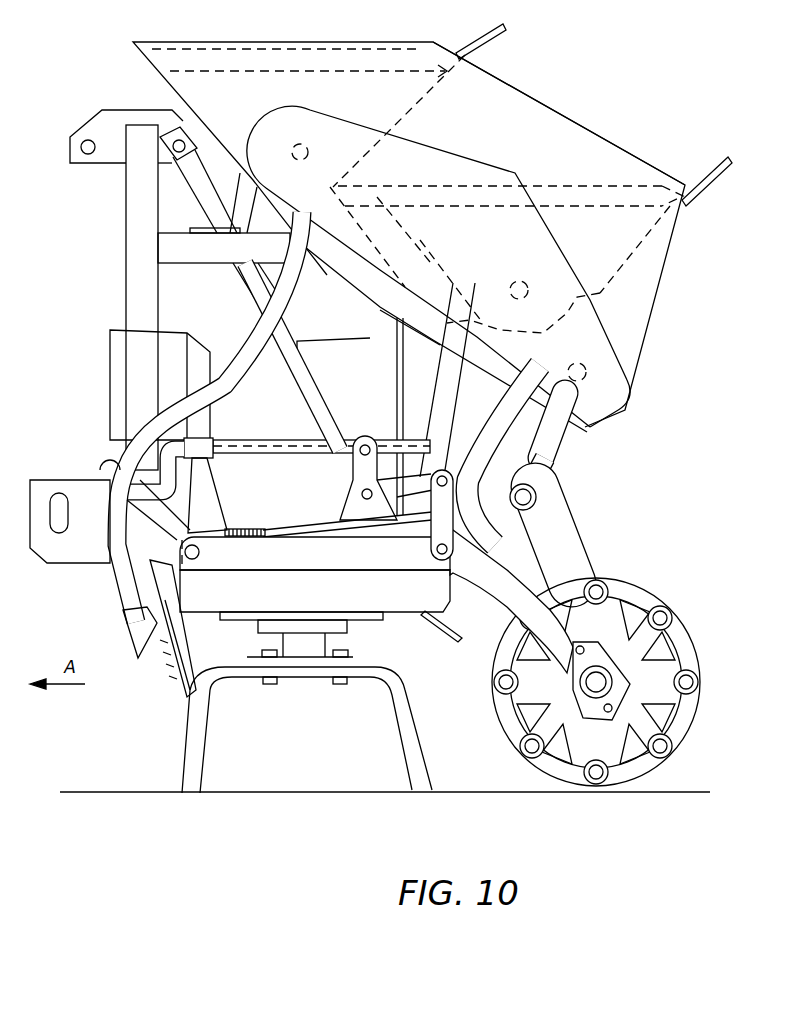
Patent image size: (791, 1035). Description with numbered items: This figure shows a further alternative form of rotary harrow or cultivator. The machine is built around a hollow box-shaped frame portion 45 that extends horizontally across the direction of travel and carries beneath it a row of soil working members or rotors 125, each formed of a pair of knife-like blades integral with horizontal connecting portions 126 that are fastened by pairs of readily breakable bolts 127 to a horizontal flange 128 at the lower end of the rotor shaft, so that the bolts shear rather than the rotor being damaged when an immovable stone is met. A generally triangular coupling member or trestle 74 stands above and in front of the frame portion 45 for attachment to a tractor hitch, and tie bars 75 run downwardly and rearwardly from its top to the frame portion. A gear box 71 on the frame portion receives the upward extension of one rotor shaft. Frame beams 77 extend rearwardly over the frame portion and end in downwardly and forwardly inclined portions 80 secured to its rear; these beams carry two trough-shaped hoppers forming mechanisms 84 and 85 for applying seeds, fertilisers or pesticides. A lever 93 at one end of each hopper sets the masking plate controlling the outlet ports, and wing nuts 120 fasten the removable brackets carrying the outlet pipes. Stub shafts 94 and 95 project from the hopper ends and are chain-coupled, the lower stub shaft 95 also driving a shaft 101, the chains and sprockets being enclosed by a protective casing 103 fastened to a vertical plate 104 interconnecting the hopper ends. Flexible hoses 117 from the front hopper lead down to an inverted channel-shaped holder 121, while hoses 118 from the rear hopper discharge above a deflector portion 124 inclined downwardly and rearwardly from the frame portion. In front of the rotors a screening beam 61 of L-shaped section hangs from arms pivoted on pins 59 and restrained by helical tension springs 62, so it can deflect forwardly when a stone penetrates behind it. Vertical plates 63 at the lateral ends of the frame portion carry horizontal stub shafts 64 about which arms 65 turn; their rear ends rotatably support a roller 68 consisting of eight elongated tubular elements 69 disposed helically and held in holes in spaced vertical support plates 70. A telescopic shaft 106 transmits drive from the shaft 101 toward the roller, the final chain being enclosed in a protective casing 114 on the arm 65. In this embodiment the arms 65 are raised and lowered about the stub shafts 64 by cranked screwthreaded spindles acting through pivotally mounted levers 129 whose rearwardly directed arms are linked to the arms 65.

The material applying mechanism 84 is at (266, 60).
The lever 93 is at (594, 104).
The vertical plate 104 is at (558, 120).
The protective casing 103 is at (465, 162).
The material applying mechanism 85 is at (566, 196).
The stub shaft 94 is at (300, 145).
The stub shaft 95 is at (513, 275).
The shaft 101 is at (565, 356).
The coupling member or trestle 74 is at (133, 217).
The frame beams 77 is at (224, 252).
The flexible hoses 117 is at (265, 321).
The tie bars 75 is at (290, 337).
The gear box 71 is at (343, 350).
The inclined portion 80 is at (443, 380).
The flexible hoses 118 is at (503, 408).
The telescopic shaft 106 is at (558, 448).
The protective casing 114 is at (560, 525).
The wing nut 120 is at (240, 442).
The pivot pin 59 is at (110, 499).
The helical tension spring 62 is at (245, 508).
The vertical plates 63 is at (348, 486).
The stub shafts 64 is at (200, 552).
The levers 129 is at (420, 490).
The frame portion 45 is at (253, 612).
The arms 65 is at (359, 560).
The flange 128 is at (258, 637).
The deflector portion 124 is at (446, 632).
The connecting portions 126 is at (249, 672).
The bolts 127 is at (330, 678).
The soil working members or rotors 125 is at (182, 760).
The screening beam 61 is at (173, 673).
The holder 121 is at (125, 627).
The roller 68 is at (656, 590).
The support plates 70 is at (658, 672).
The elements 69 is at (611, 682).